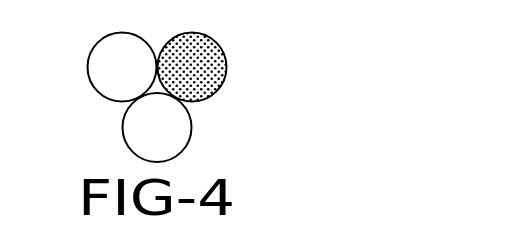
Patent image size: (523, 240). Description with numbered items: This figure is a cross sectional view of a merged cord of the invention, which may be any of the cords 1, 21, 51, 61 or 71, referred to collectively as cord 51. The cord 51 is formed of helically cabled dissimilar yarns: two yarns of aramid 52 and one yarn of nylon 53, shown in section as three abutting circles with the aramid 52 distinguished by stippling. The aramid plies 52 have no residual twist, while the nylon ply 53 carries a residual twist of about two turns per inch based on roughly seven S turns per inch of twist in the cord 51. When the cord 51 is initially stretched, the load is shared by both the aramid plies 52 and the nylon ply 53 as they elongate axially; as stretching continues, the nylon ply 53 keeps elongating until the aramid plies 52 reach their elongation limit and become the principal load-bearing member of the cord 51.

The merged cord 1 is at (249, 90).
The merged cord 21 is at (249, 90).
The cord 51 is at (249, 90).
The merged cord 61 is at (249, 90).
The merged cord 71 is at (206, 122).
The aramid yarn 52 is at (197, 53).
The nylon yarn 53 is at (115, 58).